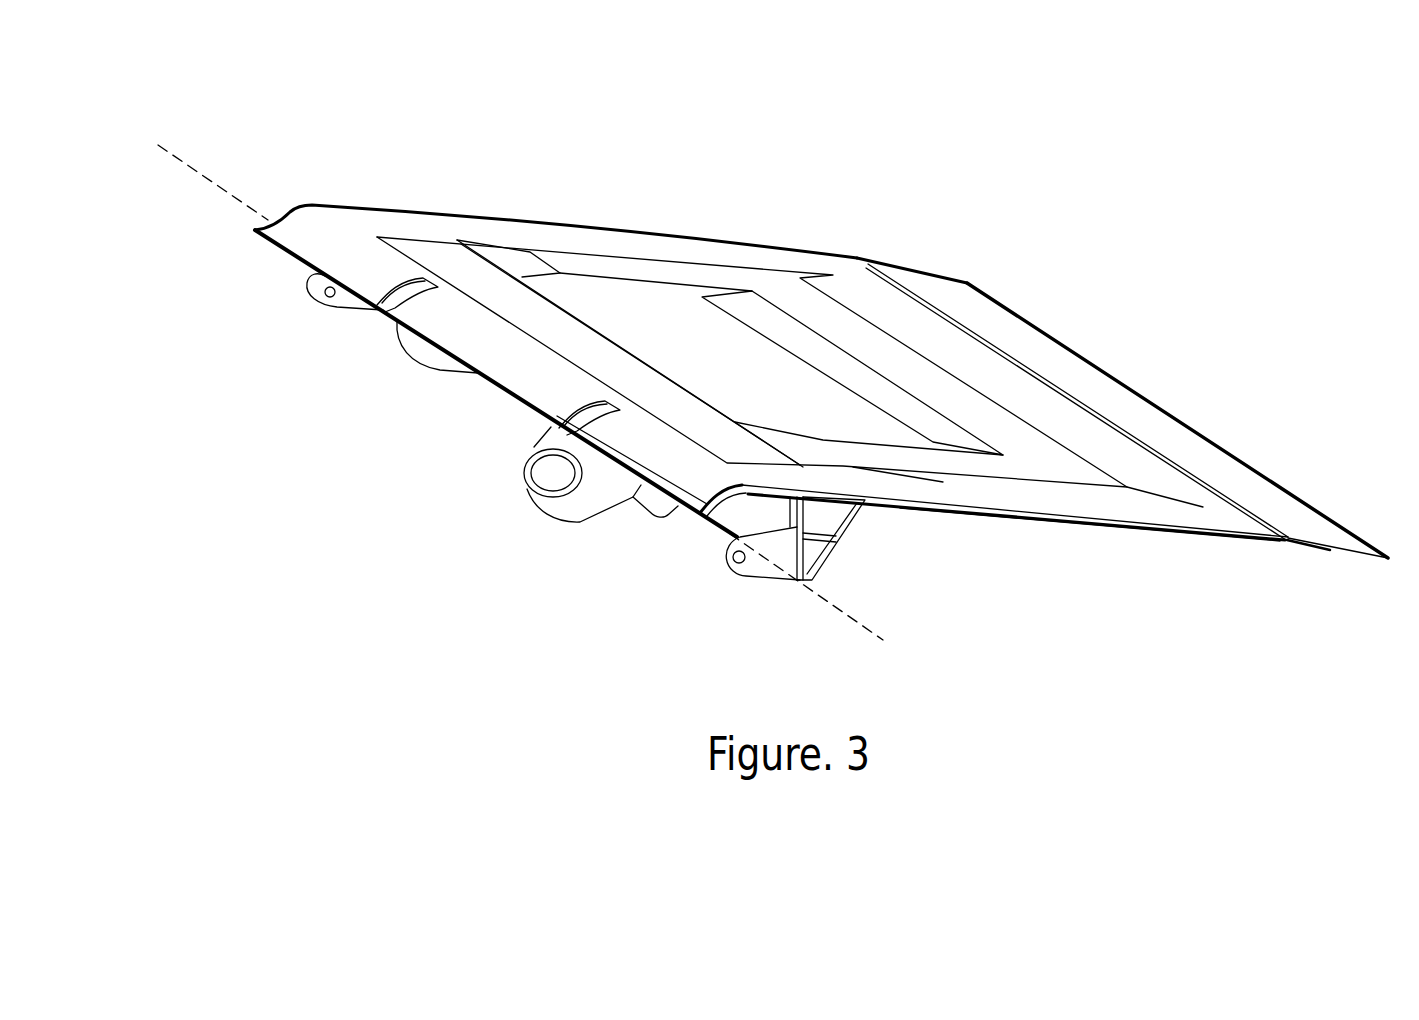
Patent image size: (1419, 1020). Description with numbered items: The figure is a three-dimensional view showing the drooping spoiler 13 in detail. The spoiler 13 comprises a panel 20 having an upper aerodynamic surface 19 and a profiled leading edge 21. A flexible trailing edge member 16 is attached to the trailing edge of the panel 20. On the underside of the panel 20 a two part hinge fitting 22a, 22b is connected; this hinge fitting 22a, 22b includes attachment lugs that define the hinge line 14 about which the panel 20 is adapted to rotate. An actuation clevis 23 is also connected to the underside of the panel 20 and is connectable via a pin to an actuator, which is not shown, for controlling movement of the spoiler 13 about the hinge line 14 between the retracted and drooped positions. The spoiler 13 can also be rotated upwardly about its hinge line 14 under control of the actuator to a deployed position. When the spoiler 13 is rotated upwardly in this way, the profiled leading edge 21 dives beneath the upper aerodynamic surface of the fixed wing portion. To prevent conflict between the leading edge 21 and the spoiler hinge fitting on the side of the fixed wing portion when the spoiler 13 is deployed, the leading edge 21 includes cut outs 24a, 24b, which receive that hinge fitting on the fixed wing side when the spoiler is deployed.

The drooping spoiler 13 is at (620, 148).
The hinge line 14 is at (868, 628).
The flexible trailing edge member 16 is at (1125, 397).
The upper aerodynamic surface 19 is at (707, 273).
The panel 20 is at (1095, 507).
The profiled leading edge 21 is at (317, 243).
The hinge fitting 22a is at (647, 508).
The hinge fitting 22b is at (420, 358).
The actuation clevis 23 is at (565, 505).
The cut out 24a is at (592, 430).
The cut out 24b is at (403, 303).